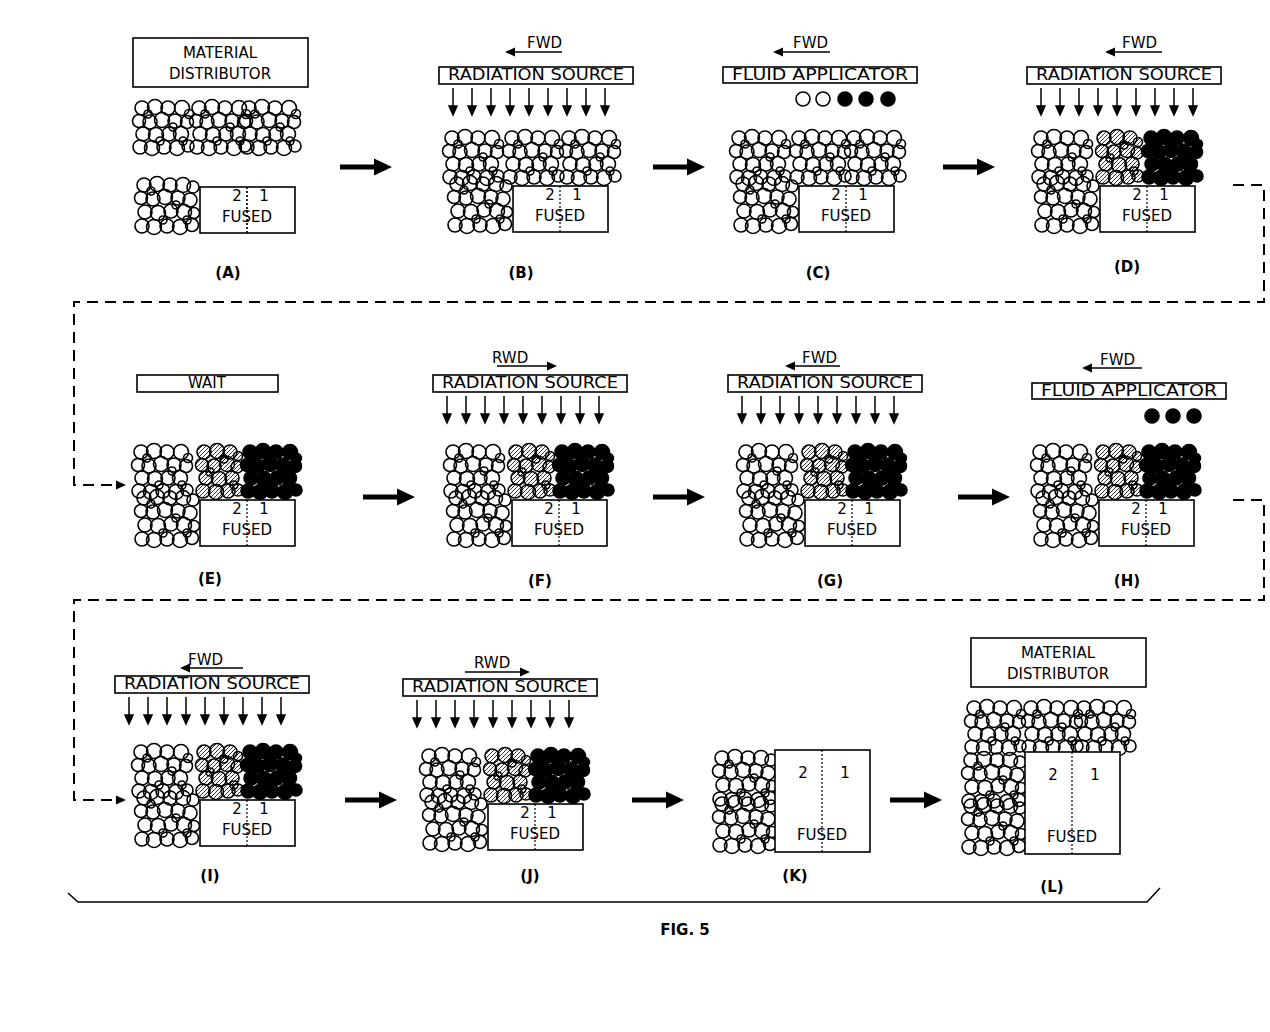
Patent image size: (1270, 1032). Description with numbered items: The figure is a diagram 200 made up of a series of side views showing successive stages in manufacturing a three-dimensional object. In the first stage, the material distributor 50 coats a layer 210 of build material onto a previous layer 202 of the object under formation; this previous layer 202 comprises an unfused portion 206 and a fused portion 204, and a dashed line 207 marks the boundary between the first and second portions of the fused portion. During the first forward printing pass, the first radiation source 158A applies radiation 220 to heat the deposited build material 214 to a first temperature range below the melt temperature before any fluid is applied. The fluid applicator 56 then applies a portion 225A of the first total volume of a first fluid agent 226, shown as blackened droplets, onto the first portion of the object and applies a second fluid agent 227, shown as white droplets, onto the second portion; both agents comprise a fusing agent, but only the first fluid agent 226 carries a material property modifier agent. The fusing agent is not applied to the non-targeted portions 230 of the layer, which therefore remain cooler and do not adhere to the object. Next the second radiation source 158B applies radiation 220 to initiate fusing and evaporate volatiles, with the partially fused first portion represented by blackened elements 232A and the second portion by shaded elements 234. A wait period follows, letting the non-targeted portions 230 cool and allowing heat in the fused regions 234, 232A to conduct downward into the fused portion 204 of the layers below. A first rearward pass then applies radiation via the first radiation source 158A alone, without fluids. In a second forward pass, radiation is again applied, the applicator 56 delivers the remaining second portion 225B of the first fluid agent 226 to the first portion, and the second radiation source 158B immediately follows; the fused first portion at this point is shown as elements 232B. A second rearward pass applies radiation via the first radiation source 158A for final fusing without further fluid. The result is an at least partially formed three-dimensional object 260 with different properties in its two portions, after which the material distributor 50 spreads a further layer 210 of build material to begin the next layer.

The diagram 200 is at (108, 32).
The material distributor 50 is at (308, 62).
The layer of build material 210 is at (302, 142).
The unfused portion 206 is at (175, 236).
The dashed line 207 is at (245, 230).
The fused portion 204 is at (253, 233).
The previous layer 202 is at (306, 210).
The first radiation source 158A is at (439, 73).
The second radiation source 158B is at (1027, 73).
The radiation 220 is at (619, 98).
The fluid applicator 56 is at (723, 73).
The portion of a first total volume of a first fluid agent 225A is at (898, 98).
The second portion of the first total volume of the first fluid agent 225B is at (1203, 414).
The first fluid agent 226 is at (905, 107).
The second fluid agent 227 is at (796, 97).
The deposited build material 214 is at (610, 176).
The non-targeted portions 230 is at (730, 155).
The shaded elements 234 is at (1120, 134).
The blackened elements 232A is at (1196, 162).
The second fused region 232B is at (1200, 478).
The 3D object 260 is at (832, 745).